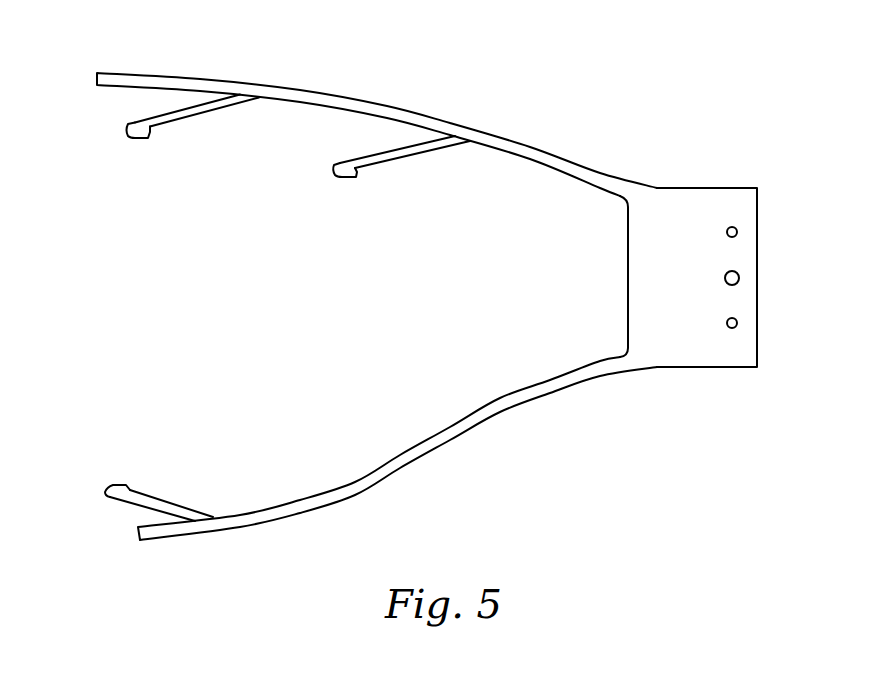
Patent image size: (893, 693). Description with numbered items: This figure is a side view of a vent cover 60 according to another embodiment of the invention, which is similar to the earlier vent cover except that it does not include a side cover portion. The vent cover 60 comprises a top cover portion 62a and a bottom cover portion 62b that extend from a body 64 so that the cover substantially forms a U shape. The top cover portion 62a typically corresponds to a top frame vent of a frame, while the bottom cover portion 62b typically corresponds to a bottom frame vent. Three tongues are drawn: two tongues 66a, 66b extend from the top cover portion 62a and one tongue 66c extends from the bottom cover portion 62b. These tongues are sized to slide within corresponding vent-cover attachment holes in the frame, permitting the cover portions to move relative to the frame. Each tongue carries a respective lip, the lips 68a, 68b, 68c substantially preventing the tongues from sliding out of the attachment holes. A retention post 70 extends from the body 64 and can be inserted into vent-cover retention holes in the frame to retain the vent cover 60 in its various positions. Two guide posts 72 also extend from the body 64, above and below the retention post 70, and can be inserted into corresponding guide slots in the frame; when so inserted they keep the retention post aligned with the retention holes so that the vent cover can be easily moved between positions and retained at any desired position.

The vent cover 60 is at (433, 320).
The top cover portion 62a is at (298, 86).
The bottom cover portion 62b is at (253, 528).
The body 64 is at (672, 183).
The tongue 66a is at (196, 119).
The tongue 66b is at (417, 150).
The tongue 66c is at (173, 508).
The lip 68a is at (145, 140).
The lip 68b is at (352, 177).
The lip 68c is at (123, 485).
The retention post 70 is at (739, 280).
The guide post 72 is at (737, 232).